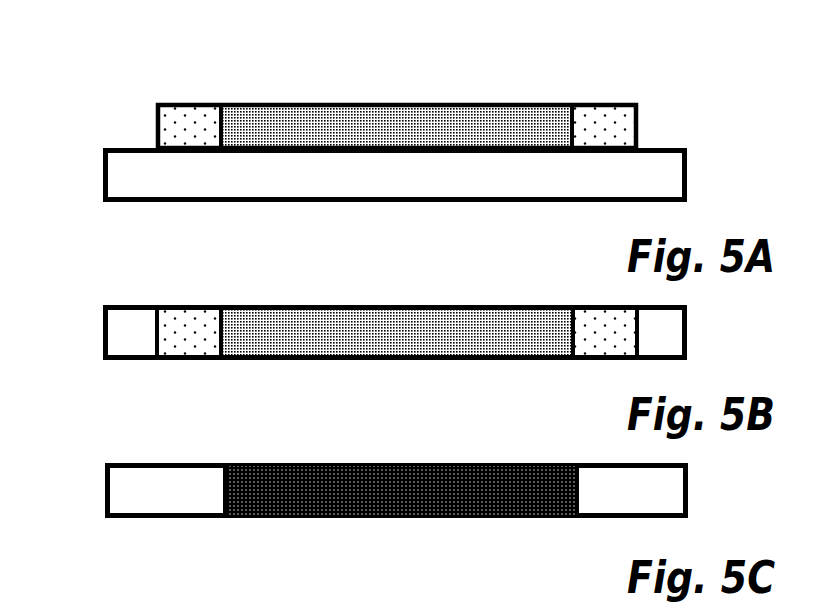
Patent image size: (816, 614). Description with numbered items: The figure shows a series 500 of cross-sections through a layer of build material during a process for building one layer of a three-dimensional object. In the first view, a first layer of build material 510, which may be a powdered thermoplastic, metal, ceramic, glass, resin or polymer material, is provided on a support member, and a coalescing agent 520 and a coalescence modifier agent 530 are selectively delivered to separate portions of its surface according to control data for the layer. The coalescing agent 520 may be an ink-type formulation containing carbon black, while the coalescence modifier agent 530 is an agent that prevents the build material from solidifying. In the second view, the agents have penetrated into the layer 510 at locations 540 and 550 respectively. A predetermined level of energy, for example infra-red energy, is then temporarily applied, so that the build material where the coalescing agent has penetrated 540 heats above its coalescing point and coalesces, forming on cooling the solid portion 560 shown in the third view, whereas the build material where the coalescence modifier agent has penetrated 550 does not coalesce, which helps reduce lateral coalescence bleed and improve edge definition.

In FIG. 5A, the series of cross-sections 500 is at (357, 112).
In FIG. 5A, the layer of build material 510 is at (103, 172).
In FIG. 5B, the layer of build material 510 is at (103, 330).
In FIG. 5C, the layer of build material 510 is at (105, 490).
In FIG. 5A, the coalescing agent 520 is at (400, 102).
In FIG. 5A, the coalescence modifier agent 530 is at (600, 103).
In FIG. 5B, the location where coalescing agent has penetrated 540 is at (398, 305).
In FIG. 5B, the location where coalescence modifier agent has penetrated 550 is at (603, 305).
In FIG. 5C, the coalesced portion 560 is at (398, 462).